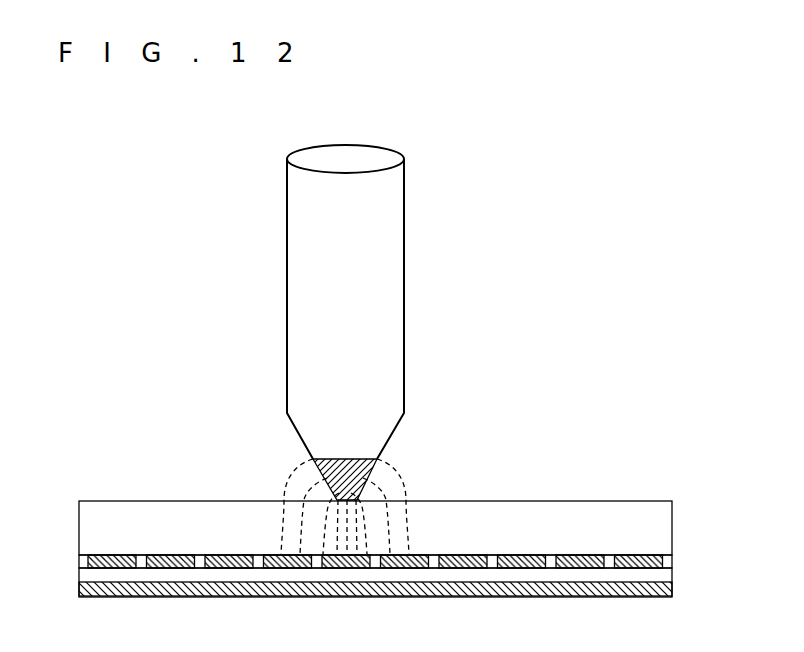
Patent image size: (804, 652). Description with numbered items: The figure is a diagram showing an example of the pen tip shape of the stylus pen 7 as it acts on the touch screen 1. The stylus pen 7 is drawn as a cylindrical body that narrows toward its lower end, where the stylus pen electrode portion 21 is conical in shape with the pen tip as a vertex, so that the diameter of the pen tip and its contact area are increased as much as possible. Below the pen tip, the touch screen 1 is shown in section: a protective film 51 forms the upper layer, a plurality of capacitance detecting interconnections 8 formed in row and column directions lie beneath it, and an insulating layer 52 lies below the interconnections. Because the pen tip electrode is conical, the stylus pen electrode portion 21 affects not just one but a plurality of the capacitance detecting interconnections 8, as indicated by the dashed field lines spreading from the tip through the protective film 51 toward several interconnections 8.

The stylus pen 7 is at (386, 148).
The stylus pen electrode portion 21 is at (346, 459).
The capacitance detecting interconnections 8 is at (169, 553).
The protective film 51 is at (92, 519).
The insulating layer 52 is at (398, 580).
The touch screen 1 is at (389, 531).